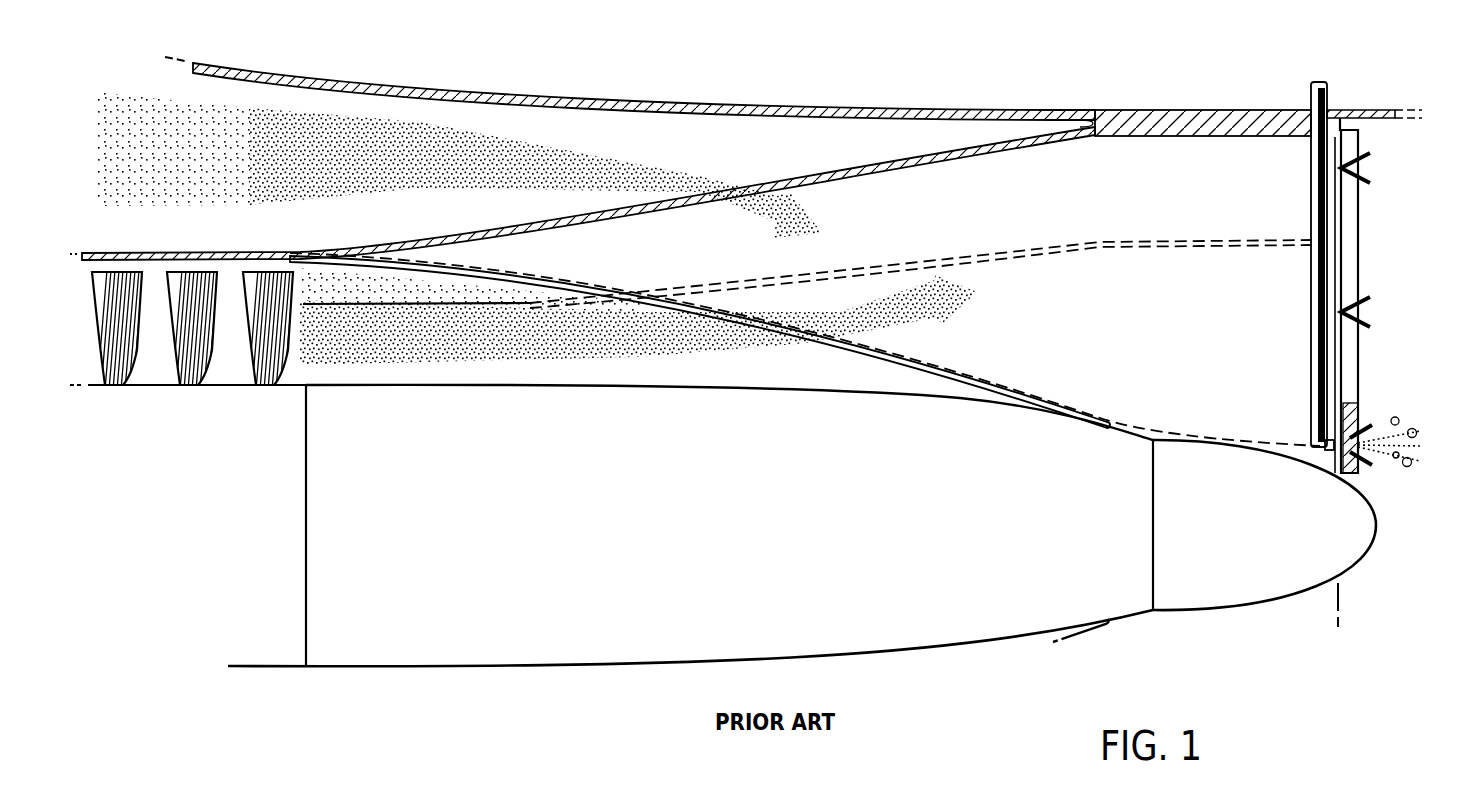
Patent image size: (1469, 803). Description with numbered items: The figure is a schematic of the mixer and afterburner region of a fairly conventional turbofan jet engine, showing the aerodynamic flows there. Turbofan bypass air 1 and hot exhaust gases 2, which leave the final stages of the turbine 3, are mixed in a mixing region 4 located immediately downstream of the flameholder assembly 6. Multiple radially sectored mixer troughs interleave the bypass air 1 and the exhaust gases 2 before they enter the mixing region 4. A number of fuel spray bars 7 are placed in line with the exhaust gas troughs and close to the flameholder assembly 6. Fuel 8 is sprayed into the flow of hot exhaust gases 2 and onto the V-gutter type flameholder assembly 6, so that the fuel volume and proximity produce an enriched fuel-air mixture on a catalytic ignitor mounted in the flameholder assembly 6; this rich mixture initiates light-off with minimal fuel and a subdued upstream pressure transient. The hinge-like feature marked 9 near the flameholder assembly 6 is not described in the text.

The turbofan bypass air 1 is at (530, 149).
The hot exhaust gases 2 is at (777, 337).
The turbine 3 is at (252, 356).
The mixing region 4 is at (1437, 306).
The flameholder assembly 6 is at (1359, 238).
The fuel spray bars 7 is at (1328, 92).
The fuel 8 is at (1391, 436).
The hinge 9 is at (1331, 452).